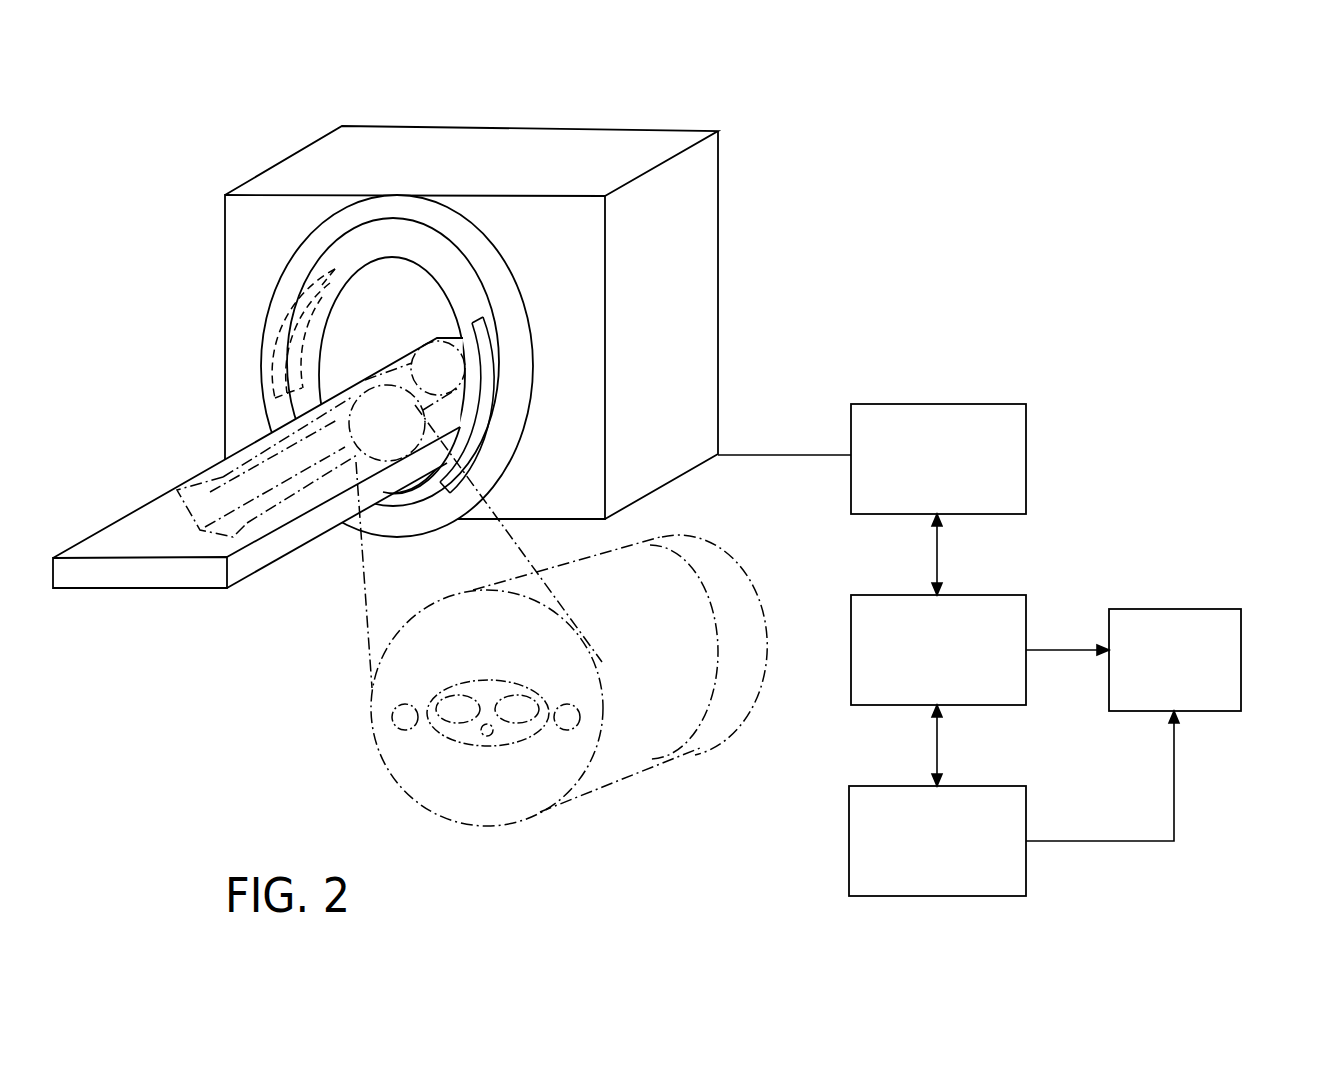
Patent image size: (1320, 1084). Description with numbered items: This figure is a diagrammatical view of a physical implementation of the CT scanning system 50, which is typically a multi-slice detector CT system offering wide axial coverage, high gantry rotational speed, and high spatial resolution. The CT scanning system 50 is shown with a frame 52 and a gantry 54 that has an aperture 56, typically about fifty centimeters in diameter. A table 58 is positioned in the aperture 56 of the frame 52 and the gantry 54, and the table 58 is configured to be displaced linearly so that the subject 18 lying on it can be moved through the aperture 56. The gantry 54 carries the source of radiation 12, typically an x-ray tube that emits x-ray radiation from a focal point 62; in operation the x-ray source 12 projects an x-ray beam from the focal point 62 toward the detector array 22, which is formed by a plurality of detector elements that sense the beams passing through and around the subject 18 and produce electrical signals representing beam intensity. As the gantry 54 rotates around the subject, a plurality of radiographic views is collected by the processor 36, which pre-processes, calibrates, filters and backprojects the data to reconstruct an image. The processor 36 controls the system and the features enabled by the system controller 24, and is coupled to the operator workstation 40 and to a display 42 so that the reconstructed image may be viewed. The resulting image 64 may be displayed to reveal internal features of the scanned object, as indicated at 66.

The CT scanning system 50 is at (427, 361).
The frame 52 is at (707, 243).
The gantry 54 is at (375, 227).
The aperture 56 is at (402, 308).
The focal point 62 is at (307, 350).
The source of radiation 12 is at (277, 375).
The detector array 22 is at (486, 388).
The patient 18 is at (213, 487).
The table 58 is at (113, 580).
The internal features 66 is at (440, 728).
The image 64 is at (577, 782).
The system controller 24 is at (1030, 441).
The processor 36 is at (850, 624).
The display 42 is at (1245, 640).
The operator workstation 40 is at (848, 821).